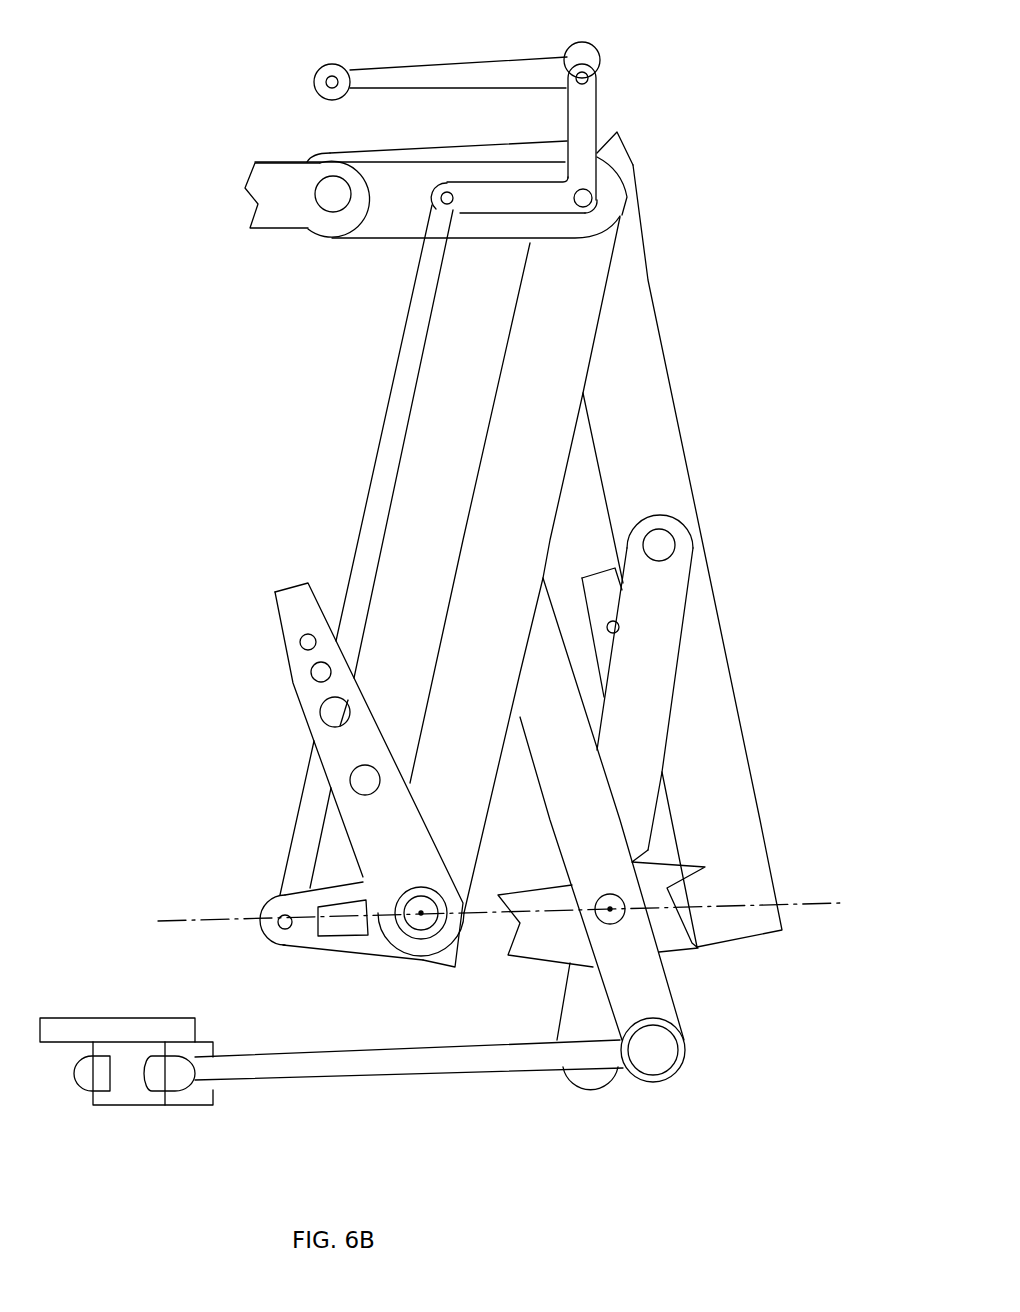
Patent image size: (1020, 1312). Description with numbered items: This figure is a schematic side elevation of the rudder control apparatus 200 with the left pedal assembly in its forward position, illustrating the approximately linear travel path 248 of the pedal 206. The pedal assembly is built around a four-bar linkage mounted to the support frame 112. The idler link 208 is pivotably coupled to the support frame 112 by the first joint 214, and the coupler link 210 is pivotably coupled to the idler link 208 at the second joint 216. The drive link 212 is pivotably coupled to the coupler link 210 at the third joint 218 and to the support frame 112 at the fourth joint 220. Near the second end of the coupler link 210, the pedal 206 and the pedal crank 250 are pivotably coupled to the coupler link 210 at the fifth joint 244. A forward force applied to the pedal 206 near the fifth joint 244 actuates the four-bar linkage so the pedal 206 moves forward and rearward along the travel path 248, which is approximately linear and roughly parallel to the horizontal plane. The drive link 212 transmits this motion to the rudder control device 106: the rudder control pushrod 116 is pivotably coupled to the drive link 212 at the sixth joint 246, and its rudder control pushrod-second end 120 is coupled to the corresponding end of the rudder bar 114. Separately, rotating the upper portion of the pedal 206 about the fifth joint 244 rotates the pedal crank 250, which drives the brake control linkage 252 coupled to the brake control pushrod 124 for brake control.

The rudder control device 106 is at (73, 999).
The support frame 112 is at (244, 200).
The rudder bar 114 is at (165, 1105).
The rudder control pushrod 116 is at (360, 1060).
The rudder control pushrod-second end 120 is at (203, 1119).
The brake control pushrod 124 is at (483, 58).
The rudder control apparatus 200 is at (722, 95).
The pedal 206 is at (293, 683).
The idler link 208 is at (502, 144).
The coupler link 210 is at (473, 488).
The drive link 212 is at (678, 662).
The first joint 214 is at (333, 212).
The second joint 216 is at (594, 198).
The third joint 218 is at (458, 549).
The fourth joint 220 is at (596, 903).
The fifth joint 244 is at (418, 940).
The sixth joint 246 is at (653, 1082).
The travel path 248 is at (815, 906).
The pedal crank 250 is at (258, 930).
The brake control linkage 252 is at (364, 448).